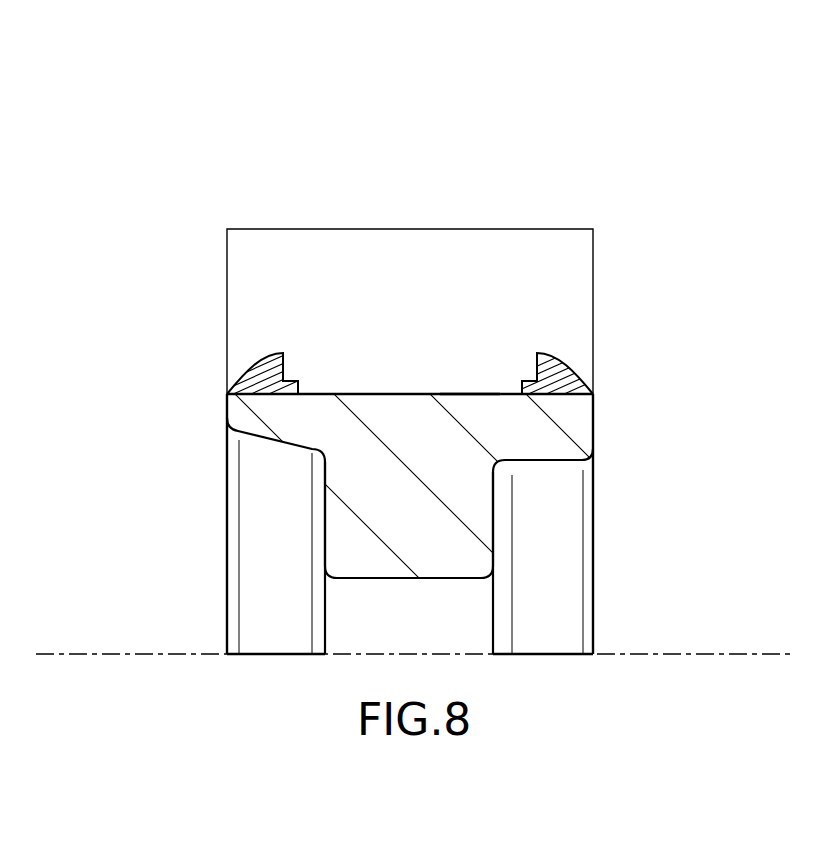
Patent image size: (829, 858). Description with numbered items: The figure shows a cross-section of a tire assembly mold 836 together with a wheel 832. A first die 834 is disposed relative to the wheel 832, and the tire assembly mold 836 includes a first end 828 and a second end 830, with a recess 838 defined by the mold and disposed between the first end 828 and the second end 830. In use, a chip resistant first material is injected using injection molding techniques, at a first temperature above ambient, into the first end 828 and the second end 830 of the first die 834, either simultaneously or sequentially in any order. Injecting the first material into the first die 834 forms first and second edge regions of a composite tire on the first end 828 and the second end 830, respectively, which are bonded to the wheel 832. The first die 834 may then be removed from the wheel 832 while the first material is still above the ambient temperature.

The first end 828 is at (250, 365).
The second end 830 is at (572, 342).
The wheel 832 is at (455, 498).
The first die 834 is at (388, 322).
The tire assembly mold 836 is at (497, 180).
The recess 838 is at (487, 394).